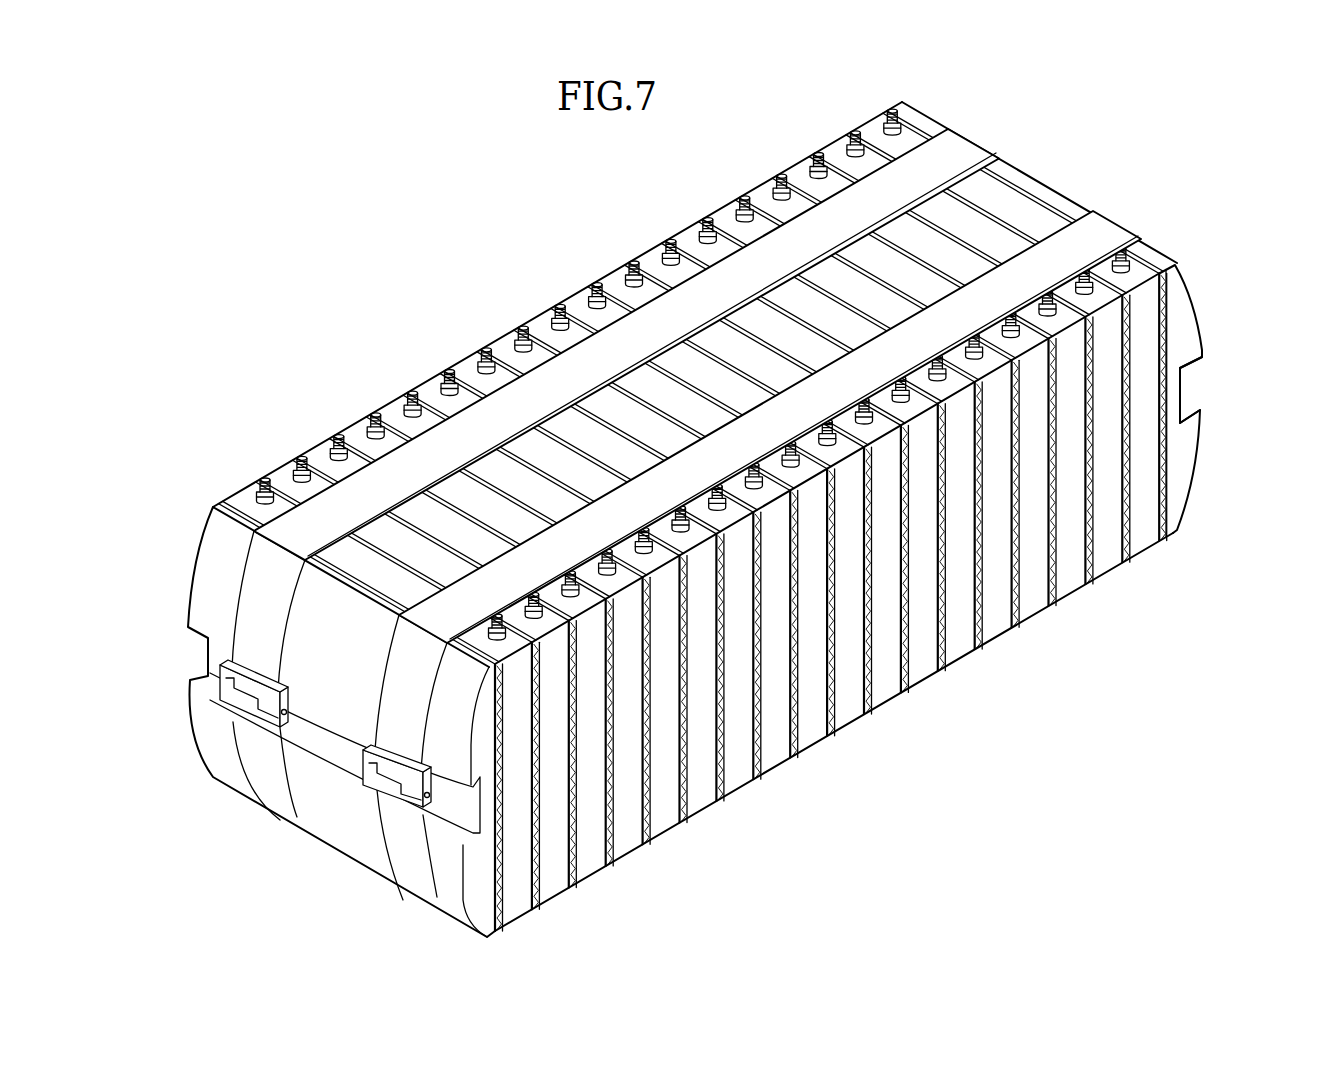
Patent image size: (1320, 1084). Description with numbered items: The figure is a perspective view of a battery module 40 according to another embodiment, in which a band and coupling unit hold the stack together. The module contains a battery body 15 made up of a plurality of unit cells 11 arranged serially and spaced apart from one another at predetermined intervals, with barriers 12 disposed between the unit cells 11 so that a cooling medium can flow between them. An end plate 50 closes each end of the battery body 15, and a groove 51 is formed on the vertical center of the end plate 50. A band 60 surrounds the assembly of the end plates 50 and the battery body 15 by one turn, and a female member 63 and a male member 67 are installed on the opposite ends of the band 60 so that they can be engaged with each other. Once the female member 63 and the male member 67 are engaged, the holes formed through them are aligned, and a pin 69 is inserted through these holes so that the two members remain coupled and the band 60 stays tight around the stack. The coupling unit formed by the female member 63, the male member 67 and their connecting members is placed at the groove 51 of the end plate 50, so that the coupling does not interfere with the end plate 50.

The battery module 40 is at (548, 182).
The unit cell 11 is at (763, 185).
The barrier 12 is at (629, 262).
The battery body 15 is at (499, 297).
The end plate 50 is at (1183, 460).
The groove 51 is at (1183, 383).
The band 60 is at (253, 602).
The female member 63 is at (247, 676).
The male member 67 is at (262, 700).
The pin 69 is at (298, 722).